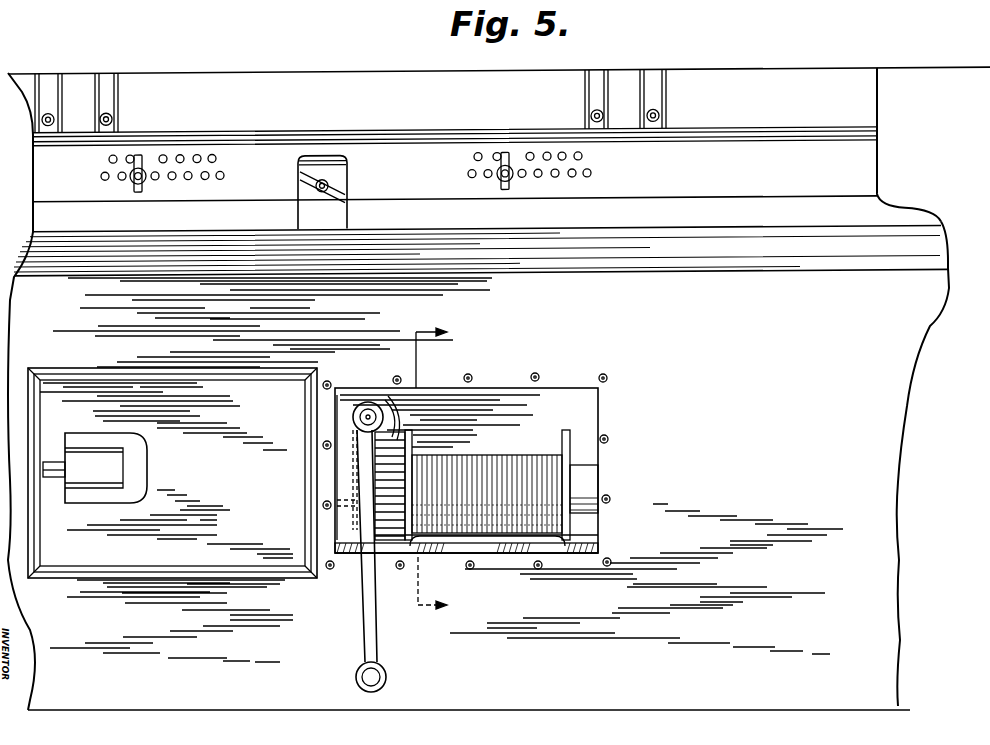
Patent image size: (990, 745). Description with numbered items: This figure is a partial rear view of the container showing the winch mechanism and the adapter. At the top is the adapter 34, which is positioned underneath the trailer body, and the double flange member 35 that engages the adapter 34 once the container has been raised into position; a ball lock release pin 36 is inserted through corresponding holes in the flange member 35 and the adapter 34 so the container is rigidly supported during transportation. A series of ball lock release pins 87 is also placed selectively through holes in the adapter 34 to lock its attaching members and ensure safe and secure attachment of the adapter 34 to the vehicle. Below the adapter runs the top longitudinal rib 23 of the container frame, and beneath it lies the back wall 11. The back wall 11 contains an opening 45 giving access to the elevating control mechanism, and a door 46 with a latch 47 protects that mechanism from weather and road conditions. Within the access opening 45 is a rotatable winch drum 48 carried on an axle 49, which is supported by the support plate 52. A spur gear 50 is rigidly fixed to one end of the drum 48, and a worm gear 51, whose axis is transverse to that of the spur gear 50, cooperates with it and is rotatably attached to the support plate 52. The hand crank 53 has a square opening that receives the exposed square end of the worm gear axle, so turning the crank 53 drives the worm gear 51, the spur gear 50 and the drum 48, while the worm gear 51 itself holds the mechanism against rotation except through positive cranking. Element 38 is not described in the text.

The back wall 11 is at (747, 318).
The top longitudinal rib 23 is at (743, 240).
The adapter 34 is at (846, 167).
The double flange member 35 is at (335, 177).
The ball lock release pin 36 is at (335, 192).
The ball lock release pin 87 is at (130, 188).
The base plate 38 is at (355, 553).
The opening 45 is at (510, 397).
The door 46 is at (208, 398).
The latch 47 is at (56, 462).
The winch drum 48 is at (570, 440).
The axle 49 is at (590, 484).
The spur gear 50 is at (396, 452).
The worm gear 51 is at (386, 408).
The support plate 52 is at (345, 475).
The hand crank 53 is at (372, 608).